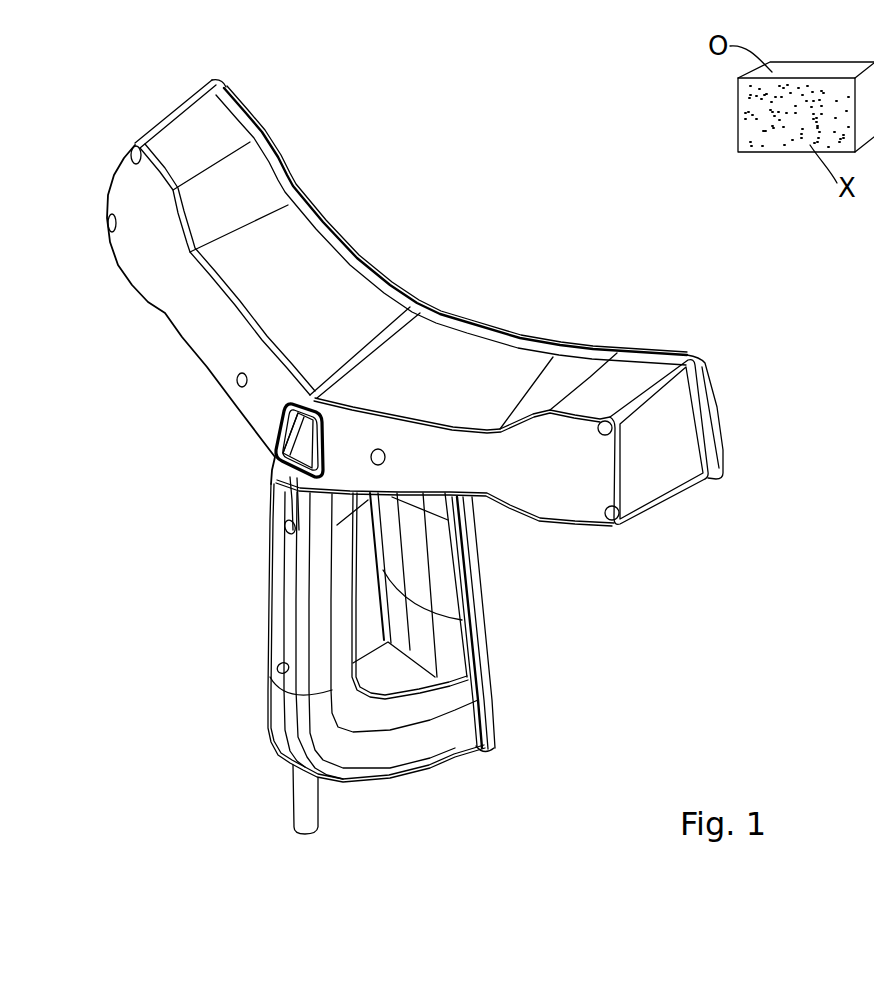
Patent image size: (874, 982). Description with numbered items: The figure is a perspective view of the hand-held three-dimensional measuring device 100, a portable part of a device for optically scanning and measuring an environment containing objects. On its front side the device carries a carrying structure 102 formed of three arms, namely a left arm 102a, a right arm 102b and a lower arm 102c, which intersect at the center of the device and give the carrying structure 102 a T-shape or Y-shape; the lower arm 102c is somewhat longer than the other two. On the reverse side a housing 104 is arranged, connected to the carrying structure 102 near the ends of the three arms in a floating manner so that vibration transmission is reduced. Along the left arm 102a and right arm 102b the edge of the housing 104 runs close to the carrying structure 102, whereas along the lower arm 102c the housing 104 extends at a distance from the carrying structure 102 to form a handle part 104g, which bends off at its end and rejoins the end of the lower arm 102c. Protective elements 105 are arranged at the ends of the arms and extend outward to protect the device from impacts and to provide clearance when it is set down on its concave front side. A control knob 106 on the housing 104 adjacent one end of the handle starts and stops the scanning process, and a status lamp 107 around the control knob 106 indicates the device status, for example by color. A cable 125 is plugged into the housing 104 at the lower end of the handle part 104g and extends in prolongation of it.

The 3D measuring device 100 is at (462, 447).
The carrying structure 102 is at (480, 540).
The left arm 102a is at (288, 182).
The right arm 102b is at (540, 342).
The lower arm 102c is at (477, 693).
The housing 104 is at (357, 288).
The handle part 104g is at (290, 612).
The protective elements 105 is at (228, 84).
The control knob 106 is at (277, 477).
The status lamp 107 is at (292, 428).
The cable 125 is at (303, 797).